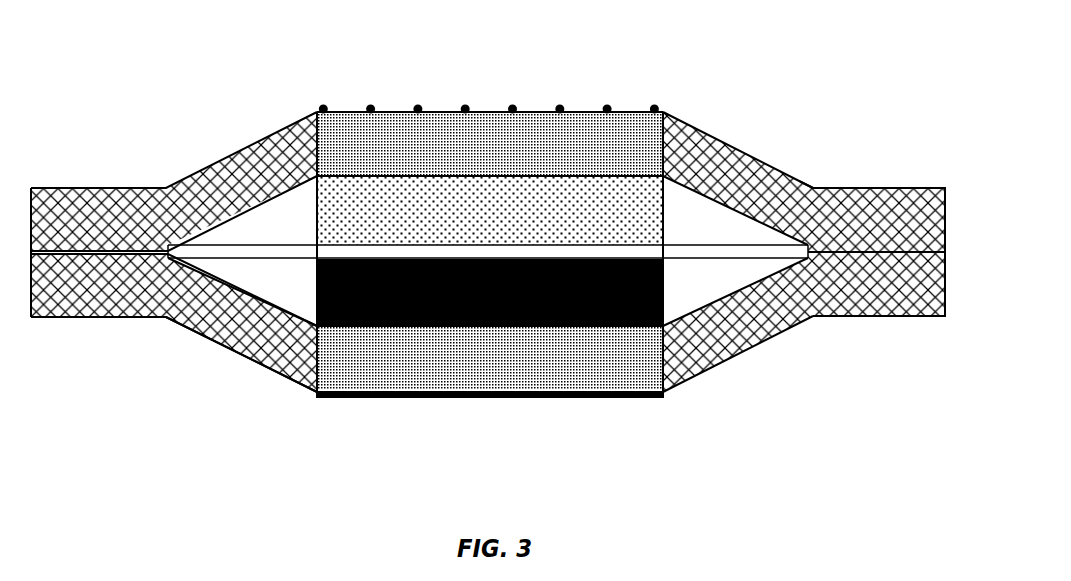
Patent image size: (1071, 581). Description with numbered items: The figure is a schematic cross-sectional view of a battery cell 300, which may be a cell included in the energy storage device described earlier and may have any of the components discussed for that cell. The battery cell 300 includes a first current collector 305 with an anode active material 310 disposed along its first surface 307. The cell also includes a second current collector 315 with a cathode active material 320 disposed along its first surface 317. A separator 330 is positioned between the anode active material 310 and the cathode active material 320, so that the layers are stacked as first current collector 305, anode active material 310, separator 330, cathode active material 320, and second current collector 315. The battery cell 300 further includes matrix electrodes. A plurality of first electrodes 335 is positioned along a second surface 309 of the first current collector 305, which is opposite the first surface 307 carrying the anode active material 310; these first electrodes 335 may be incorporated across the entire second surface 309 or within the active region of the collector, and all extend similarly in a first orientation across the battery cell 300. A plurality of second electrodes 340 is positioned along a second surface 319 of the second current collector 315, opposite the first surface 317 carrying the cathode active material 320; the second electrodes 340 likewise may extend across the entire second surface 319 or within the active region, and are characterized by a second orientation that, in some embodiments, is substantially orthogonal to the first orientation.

The battery cell 300 is at (144, 85).
The first current collector 305 is at (881, 187).
The first surface of the first current collector 307 is at (717, 198).
The second surface of the first current collector 309 is at (815, 187).
The anode active material 310 is at (510, 176).
The second current collector 315 is at (830, 318).
The first surface of the second current collector 317 is at (268, 327).
The second surface of the second current collector 319 is at (712, 367).
The cathode active material 320 is at (500, 330).
The separator 330 is at (740, 260).
The first electrodes 335 is at (606, 107).
The second electrodes 340 is at (567, 398).